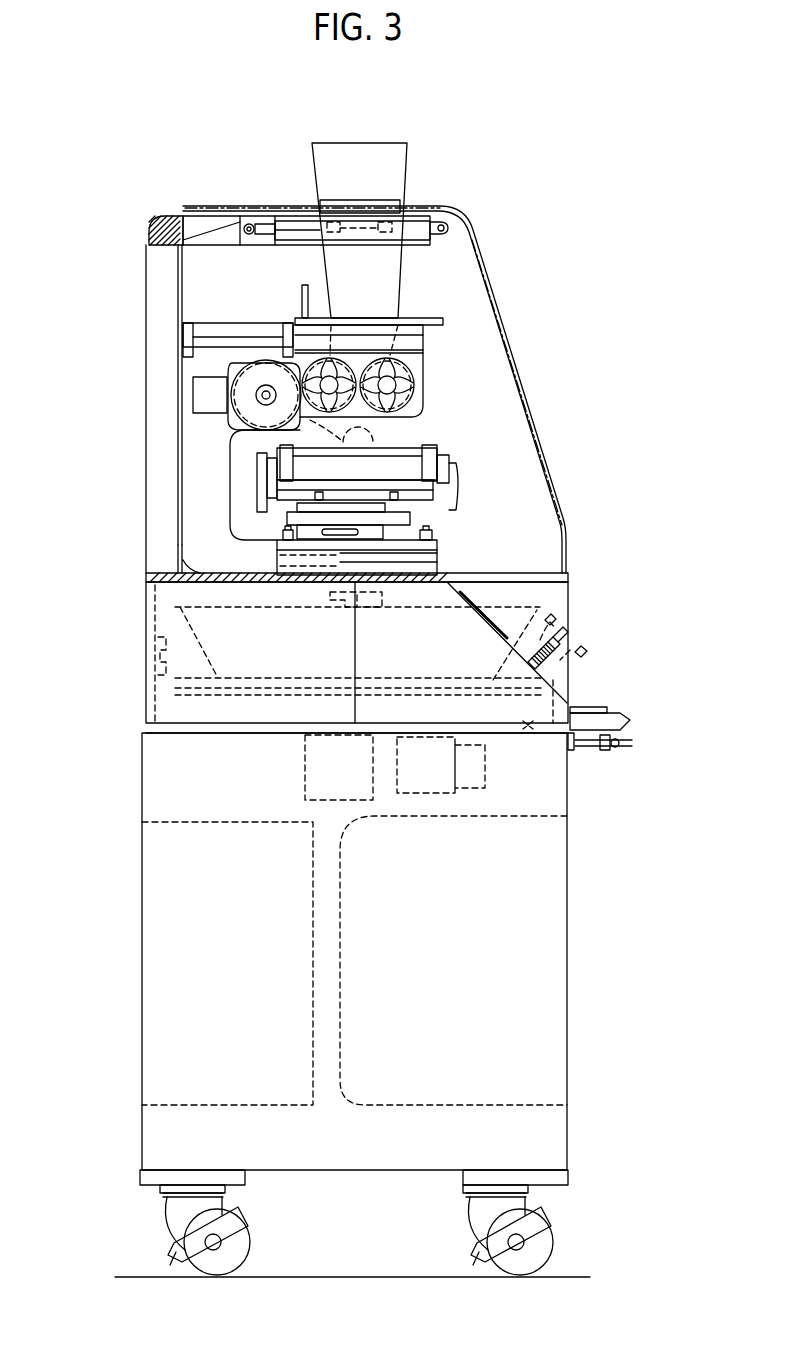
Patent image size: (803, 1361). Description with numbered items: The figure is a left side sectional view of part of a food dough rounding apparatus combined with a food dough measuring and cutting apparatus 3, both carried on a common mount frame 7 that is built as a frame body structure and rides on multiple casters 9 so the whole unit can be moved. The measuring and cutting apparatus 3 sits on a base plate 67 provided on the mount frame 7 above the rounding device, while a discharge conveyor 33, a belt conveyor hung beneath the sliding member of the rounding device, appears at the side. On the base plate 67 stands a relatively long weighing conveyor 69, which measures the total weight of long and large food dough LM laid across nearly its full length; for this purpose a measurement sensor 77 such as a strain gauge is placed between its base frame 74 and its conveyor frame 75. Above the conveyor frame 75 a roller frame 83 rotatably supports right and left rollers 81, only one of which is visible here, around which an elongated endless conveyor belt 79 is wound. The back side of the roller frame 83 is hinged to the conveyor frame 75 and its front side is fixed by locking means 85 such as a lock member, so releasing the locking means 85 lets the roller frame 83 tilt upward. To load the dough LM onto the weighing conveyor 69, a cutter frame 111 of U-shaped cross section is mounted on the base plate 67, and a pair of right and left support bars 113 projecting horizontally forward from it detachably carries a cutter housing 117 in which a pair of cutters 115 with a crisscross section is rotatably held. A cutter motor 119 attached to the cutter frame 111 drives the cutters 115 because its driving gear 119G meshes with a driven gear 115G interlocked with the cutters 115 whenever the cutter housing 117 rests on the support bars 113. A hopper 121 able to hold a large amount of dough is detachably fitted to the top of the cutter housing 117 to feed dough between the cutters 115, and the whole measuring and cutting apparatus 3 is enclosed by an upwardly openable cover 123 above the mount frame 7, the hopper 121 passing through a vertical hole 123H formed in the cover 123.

The food dough measuring and cutting apparatus 3 is at (173, 511).
The mount frame 7 is at (142, 950).
The casters 9 is at (250, 1237).
The discharge conveyor 33 is at (607, 712).
The base plate 67 is at (165, 573).
The weighing conveyor 69 is at (252, 483).
The base frame 74 is at (437, 546).
The conveyor frame 75 is at (385, 532).
The measurement sensor 77 is at (306, 578).
The endless conveyor belt 79 is at (440, 442).
The rollers 81 is at (452, 455).
The roller frame 83 is at (457, 472).
The locking means 85 is at (415, 516).
The cutter frame 111 is at (190, 445).
The support bars 113 is at (425, 340).
The cutters 115 is at (347, 365).
The driven gear 115G is at (405, 372).
The cutter housing 117 is at (425, 366).
The cutter motor 119 is at (238, 372).
The driving gear 119G is at (288, 360).
The hopper 121 is at (360, 153).
The cover 123 is at (492, 240).
The vertical hole 123H is at (405, 208).
The food dough LM is at (343, 428).